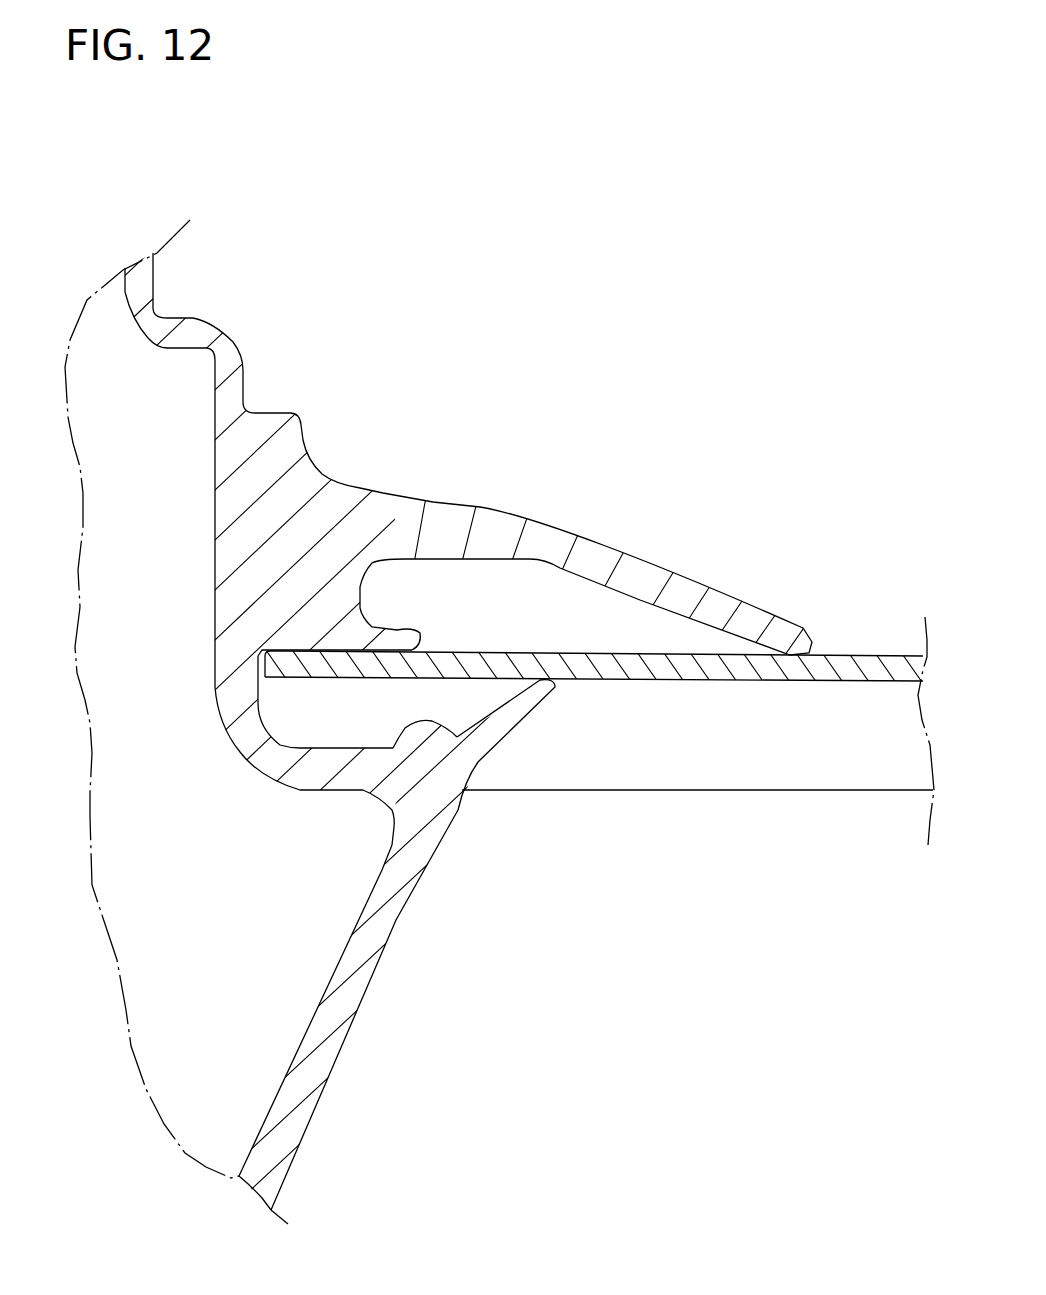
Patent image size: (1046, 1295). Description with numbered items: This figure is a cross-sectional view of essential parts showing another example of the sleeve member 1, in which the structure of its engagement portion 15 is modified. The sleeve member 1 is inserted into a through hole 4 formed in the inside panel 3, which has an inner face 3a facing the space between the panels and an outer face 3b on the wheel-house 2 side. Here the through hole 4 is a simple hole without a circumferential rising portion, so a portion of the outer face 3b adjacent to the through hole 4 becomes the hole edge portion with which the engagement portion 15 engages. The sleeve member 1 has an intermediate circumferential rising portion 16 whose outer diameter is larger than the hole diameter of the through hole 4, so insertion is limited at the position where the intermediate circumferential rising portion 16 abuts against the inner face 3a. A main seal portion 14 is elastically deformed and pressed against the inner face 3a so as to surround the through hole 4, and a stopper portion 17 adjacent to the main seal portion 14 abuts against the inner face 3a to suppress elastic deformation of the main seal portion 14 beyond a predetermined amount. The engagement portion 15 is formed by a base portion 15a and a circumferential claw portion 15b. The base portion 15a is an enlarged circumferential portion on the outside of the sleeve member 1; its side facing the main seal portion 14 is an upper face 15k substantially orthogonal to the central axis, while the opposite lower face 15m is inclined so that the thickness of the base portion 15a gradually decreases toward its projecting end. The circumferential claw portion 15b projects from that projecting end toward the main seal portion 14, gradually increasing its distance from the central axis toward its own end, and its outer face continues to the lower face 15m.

The sleeve member 1 is at (157, 283).
The intermediate circumferential rising portion 16 is at (273, 562).
The stopper portion 17 is at (400, 637).
The main seal portion 14 is at (680, 572).
The inside panel 3 is at (885, 655).
The inner face 3a is at (860, 655).
The outer face 3b is at (847, 683).
The through hole 4 is at (262, 653).
The base portion 15a is at (372, 803).
The upper face 15k is at (437, 723).
The circumferential claw portion 15b is at (533, 700).
The engagement portion 15 is at (430, 770).
The lower face 15m is at (403, 928).
The wheel house 2 is at (678, 1020).